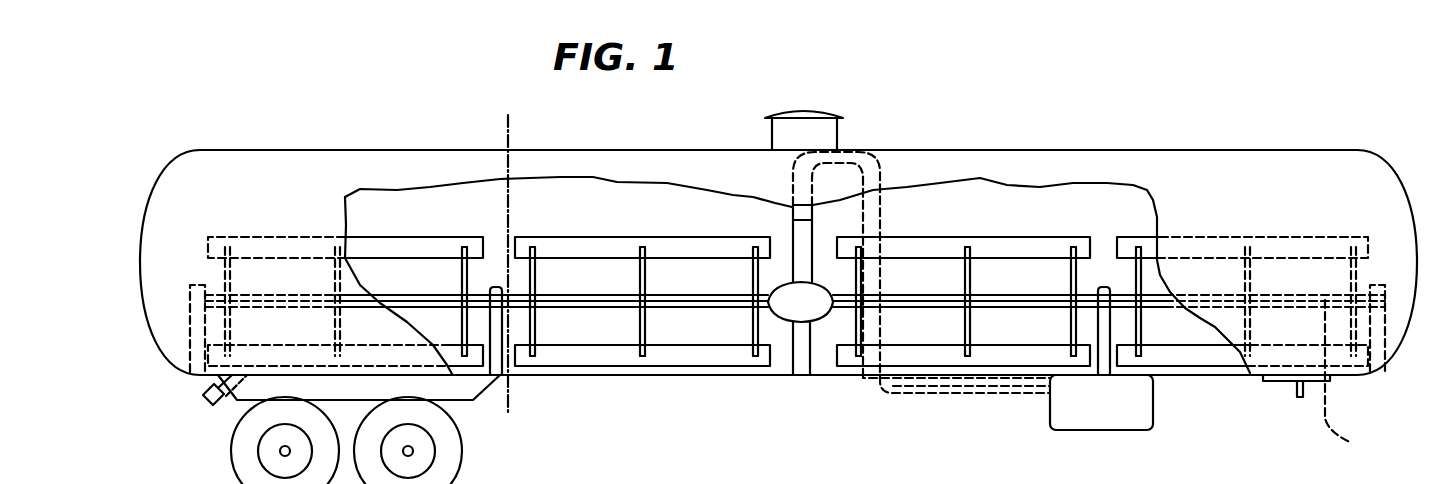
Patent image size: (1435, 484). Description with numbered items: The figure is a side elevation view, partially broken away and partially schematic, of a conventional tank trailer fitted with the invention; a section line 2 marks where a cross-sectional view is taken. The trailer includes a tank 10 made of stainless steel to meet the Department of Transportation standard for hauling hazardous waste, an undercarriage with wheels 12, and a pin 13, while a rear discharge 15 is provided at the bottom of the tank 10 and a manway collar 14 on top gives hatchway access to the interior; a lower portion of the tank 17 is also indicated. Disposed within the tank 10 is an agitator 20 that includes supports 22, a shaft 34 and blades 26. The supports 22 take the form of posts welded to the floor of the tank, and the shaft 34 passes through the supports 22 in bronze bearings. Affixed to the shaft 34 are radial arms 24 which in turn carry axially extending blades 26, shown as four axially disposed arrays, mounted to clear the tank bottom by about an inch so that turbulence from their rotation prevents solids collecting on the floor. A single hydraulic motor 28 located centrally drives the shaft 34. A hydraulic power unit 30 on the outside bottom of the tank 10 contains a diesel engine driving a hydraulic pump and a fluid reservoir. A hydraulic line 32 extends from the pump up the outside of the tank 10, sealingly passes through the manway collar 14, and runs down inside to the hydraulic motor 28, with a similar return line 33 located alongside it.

The section line 2- 2 is at (538, 401).
The tank 10 is at (1010, 150).
The wheels 12 is at (435, 453).
The pin 13 is at (1300, 395).
The manway collar 14 is at (835, 133).
The rear discharge 15 is at (205, 392).
The tank bottom 17 is at (1172, 376).
The agitator 20 is at (1077, 237).
The supports 22 is at (1115, 285).
The radial arms 24 is at (647, 330).
The blades 26 is at (848, 360).
The hydraulic motor 28 is at (790, 307).
The hydraulic power unit 30 is at (1122, 414).
The hydraulic line 32 is at (792, 205).
The return line 33 is at (790, 222).
The shaft 34 is at (1349, 378).